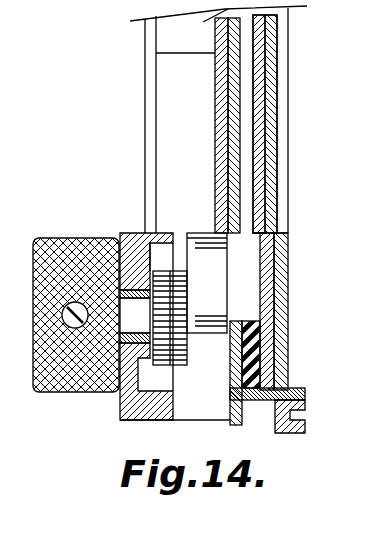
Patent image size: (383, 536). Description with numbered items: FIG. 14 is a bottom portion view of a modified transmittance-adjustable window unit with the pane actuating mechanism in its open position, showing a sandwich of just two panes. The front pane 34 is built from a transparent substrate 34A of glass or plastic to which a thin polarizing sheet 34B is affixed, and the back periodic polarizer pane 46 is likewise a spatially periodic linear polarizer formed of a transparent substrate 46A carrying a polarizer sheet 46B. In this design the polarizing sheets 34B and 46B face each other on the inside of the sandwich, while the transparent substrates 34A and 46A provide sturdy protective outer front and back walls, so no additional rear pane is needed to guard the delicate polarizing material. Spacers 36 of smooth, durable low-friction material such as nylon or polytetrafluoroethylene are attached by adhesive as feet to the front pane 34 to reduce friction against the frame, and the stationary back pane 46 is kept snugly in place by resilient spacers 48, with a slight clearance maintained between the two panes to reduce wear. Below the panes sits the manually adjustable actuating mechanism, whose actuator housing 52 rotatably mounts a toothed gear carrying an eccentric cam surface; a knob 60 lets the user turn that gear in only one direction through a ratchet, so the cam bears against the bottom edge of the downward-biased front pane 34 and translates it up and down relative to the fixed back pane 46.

The spacers 36 is at (168, 37).
The front pane 34 is at (205, 97).
The transparent substrate 34A is at (218, 124).
The polarizing sheet 34B is at (230, 160).
The back periodic polarizer pane 46 is at (285, 94).
The transparent substrate 46A is at (265, 140).
The polarizer sheet 46B is at (266, 198).
The resilient spacers 48 is at (275, 382).
The actuator housing 52 is at (128, 233).
The knob 60 is at (62, 237).